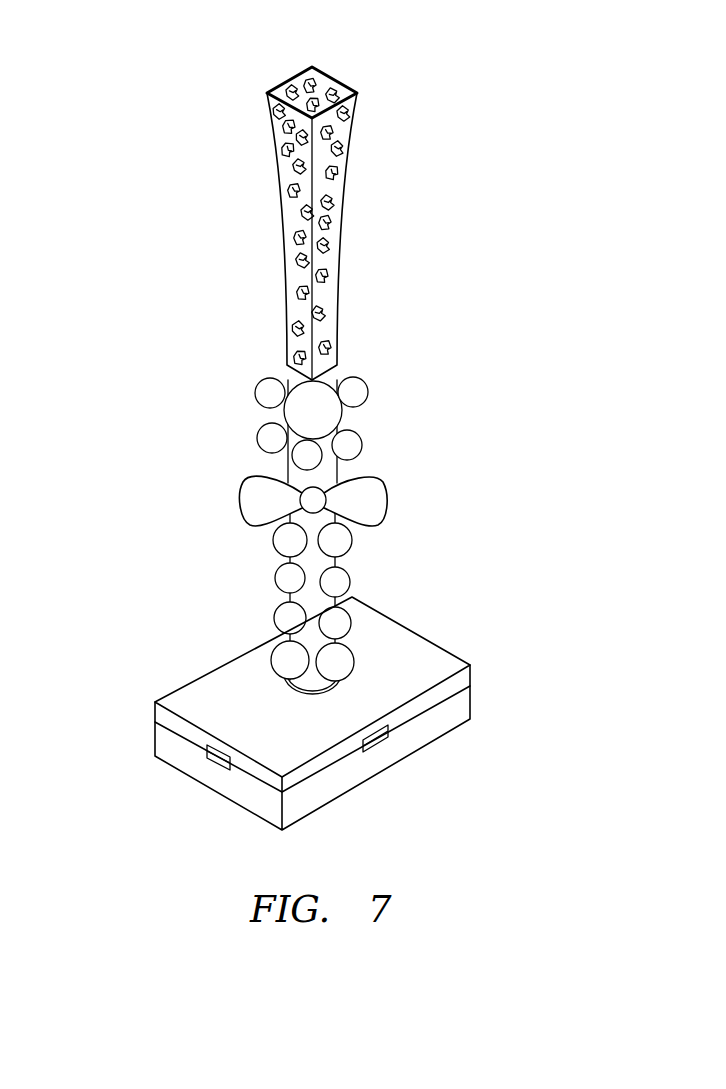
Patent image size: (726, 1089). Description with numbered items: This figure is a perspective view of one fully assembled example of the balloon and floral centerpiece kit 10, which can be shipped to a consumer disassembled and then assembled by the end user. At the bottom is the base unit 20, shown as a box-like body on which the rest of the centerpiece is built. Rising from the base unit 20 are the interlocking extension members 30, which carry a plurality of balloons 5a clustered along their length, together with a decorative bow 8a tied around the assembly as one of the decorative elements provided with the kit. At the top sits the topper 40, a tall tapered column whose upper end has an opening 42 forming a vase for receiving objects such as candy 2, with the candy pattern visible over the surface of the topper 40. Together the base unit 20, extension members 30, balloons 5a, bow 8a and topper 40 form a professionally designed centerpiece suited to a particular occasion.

The balloon and floral centerpiece kit 10 is at (126, 146).
The candy 2 is at (296, 93).
The opening 42 is at (345, 71).
The topper 40 is at (369, 184).
The balloons 5a is at (285, 395).
The interlocking extension members 30 is at (374, 460).
The decorative bow 8a is at (360, 505).
The base unit 20 is at (176, 651).